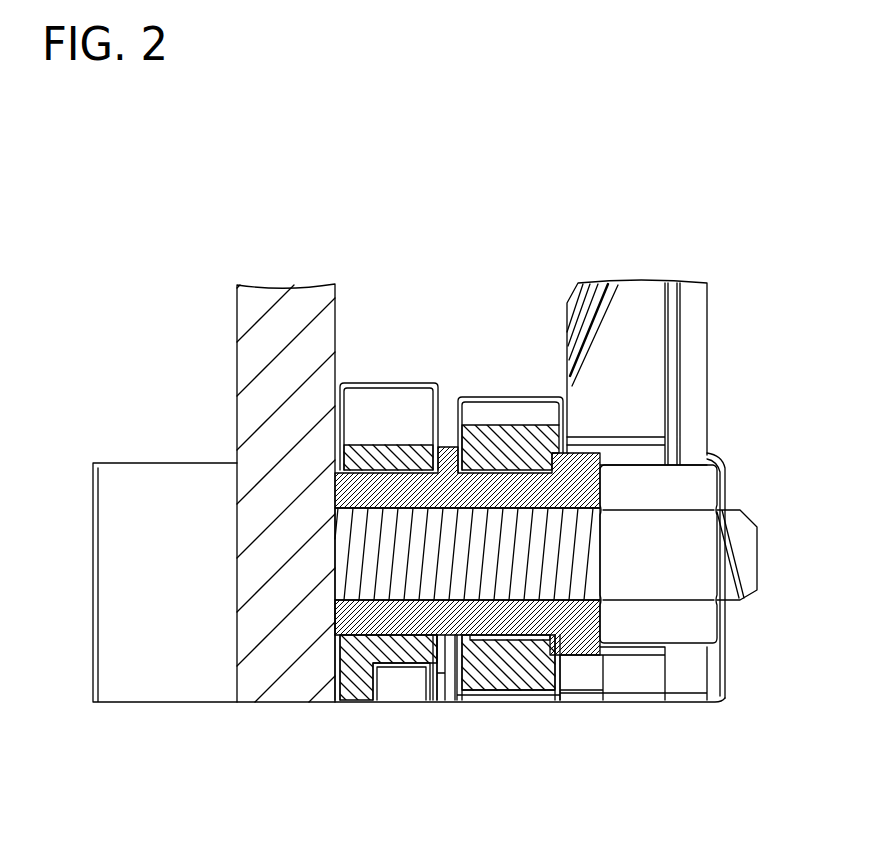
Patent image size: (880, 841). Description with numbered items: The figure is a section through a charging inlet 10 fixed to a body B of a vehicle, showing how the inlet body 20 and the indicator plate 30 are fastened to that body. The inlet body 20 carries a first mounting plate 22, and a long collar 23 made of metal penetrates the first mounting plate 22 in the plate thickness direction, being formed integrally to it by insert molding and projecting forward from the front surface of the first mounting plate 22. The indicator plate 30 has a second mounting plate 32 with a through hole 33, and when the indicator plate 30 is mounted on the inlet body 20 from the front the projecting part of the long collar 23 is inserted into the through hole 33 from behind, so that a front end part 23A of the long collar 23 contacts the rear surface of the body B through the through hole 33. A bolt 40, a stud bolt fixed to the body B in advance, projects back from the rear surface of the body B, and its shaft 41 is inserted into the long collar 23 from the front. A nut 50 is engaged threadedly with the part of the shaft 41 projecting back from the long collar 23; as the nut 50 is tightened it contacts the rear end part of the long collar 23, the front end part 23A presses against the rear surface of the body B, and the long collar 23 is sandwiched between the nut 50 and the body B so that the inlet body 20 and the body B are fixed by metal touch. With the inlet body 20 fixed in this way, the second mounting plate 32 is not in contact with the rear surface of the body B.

The charging inlet 10 is at (433, 95).
The inlet body 20 is at (574, 247).
The indicator plate 30 is at (411, 293).
The body B is at (309, 301).
The second mounting plate 32 is at (388, 456).
The through hole 33 is at (398, 636).
The long collar 23 is at (448, 488).
The front end part 23A is at (335, 612).
The first mounting plate 22 is at (518, 442).
The shaft 41 is at (455, 572).
The bolt 40 is at (518, 605).
The nut 50 is at (681, 632).